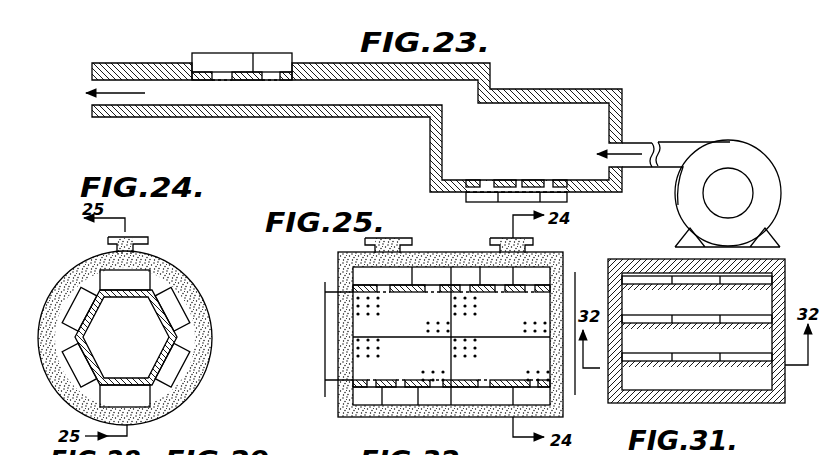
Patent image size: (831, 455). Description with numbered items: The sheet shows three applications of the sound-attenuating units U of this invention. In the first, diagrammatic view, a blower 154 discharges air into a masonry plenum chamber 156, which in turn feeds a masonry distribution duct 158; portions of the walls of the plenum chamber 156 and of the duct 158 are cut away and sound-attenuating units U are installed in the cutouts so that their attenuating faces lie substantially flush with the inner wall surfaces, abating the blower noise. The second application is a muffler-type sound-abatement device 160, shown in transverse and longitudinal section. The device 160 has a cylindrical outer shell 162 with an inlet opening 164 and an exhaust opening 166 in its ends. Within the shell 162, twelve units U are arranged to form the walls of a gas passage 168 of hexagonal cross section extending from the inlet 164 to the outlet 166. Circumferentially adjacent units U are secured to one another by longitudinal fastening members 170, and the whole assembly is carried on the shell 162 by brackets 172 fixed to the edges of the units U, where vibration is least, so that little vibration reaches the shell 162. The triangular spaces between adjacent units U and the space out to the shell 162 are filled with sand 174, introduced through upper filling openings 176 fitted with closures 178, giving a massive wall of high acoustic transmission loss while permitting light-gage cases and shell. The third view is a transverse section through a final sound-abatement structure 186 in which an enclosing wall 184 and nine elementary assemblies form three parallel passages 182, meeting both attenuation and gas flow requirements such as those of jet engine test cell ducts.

In FIG. 23, the blower 154 is at (760, 148).
In FIG. 23, the plenum chamber 156 is at (578, 102).
In FIG. 23, the distribution duct 158 is at (360, 112).
In FIG. 24, the sound-abatement device 160 is at (206, 296).
In FIG. 25, the sound-abatement device 160 is at (334, 406).
In FIG. 24, the outer shell 162 is at (176, 294).
In FIG. 25, the outer shell 162 is at (470, 255).
In FIG. 25, the inlet opening 164 is at (340, 322).
In FIG. 25, the exhaust opening 166 is at (562, 380).
In FIG. 24, the gas passage 168 is at (155, 342).
In FIG. 25, the gas passage 168 is at (470, 372).
In FIG. 24, the longitudinal fastening members 170 is at (100, 270).
In FIG. 24, the brackets 172 is at (72, 291).
In FIG. 24, the sand 174 is at (192, 362).
In FIG. 25, the sand 174 is at (403, 405).
In FIG. 24, the filling openings 176 is at (138, 268).
In FIG. 25, the filling openings 176 is at (508, 238).
In FIG. 24, the closures 178 is at (130, 241).
In FIG. 25, the closures 178 is at (396, 238).
In FIG. 31, the parallel passages 182 is at (757, 305).
In FIG. 31, the enclosing wall 184 is at (778, 392).
In FIG. 31, the sound-abatement structure 186 is at (634, 256).
In FIG. 23, the sound-attenuating units U is at (244, 60).
In FIG. 24, the sound-attenuating units U is at (62, 280).
In FIG. 25, the sound-attenuating units U is at (353, 272).